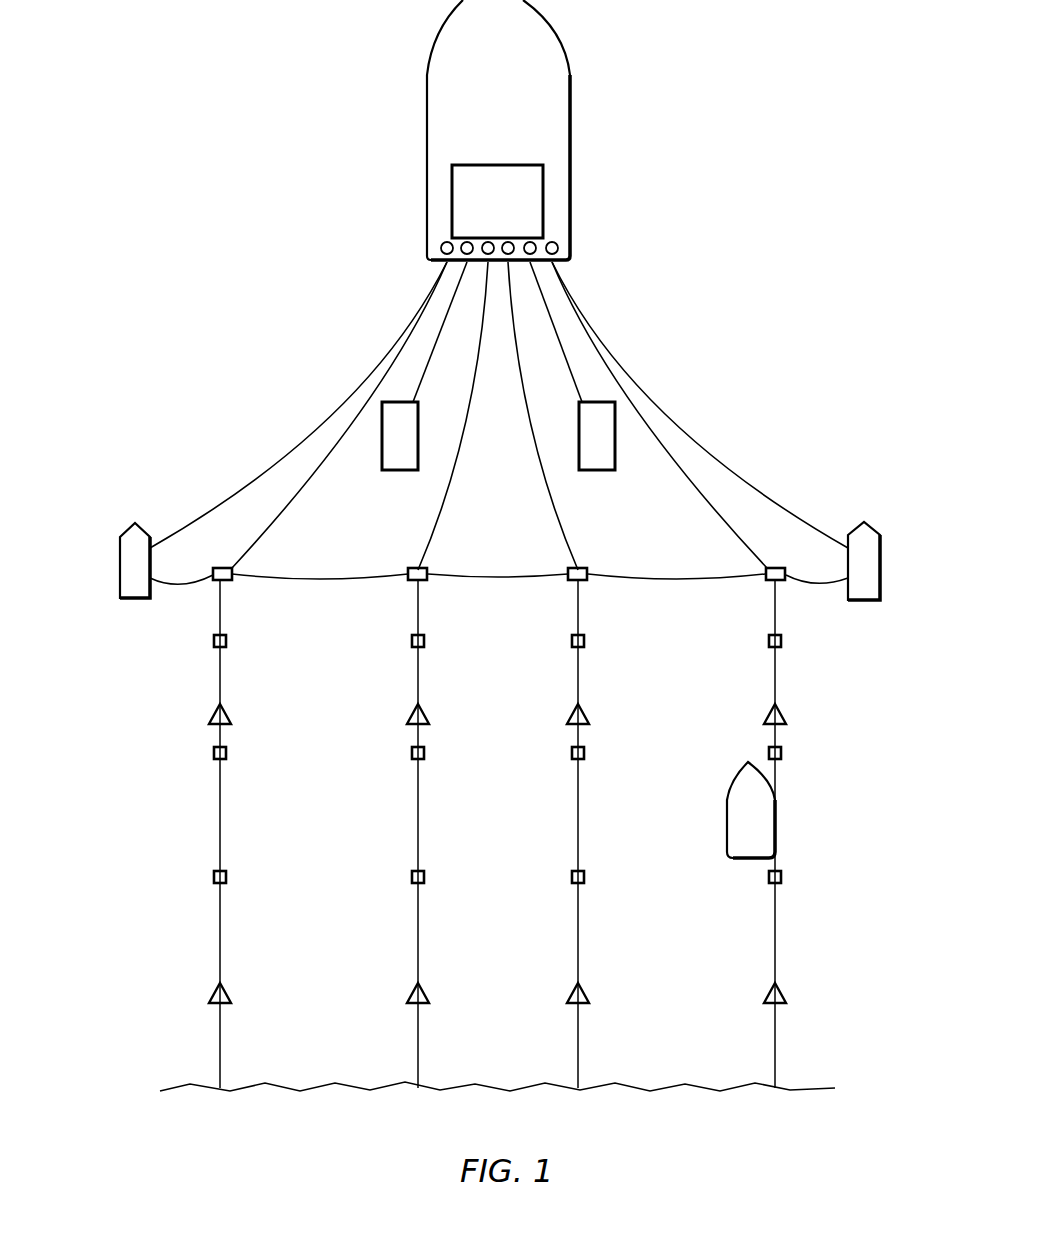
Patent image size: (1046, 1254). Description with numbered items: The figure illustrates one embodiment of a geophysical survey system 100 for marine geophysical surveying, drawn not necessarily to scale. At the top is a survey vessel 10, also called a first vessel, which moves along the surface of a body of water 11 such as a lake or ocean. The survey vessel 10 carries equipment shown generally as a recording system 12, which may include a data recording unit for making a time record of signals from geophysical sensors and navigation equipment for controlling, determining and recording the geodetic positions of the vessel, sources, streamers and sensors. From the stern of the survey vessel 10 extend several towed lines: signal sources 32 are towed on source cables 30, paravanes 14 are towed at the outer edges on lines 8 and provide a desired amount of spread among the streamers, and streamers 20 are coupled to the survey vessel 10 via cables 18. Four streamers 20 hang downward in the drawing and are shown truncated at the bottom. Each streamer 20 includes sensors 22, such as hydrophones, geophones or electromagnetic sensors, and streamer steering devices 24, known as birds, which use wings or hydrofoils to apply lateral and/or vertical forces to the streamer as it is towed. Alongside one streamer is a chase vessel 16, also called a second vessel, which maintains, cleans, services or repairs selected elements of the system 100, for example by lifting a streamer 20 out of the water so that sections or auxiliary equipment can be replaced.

The geophysical survey system 100 is at (280, 86).
The body of water 11 is at (680, 66).
The survey vessel 10 is at (510, 95).
The recording system 12 is at (496, 165).
The source cable 30 is at (455, 297).
The tow rope (lead line) 8 is at (378, 358).
The cable 18 is at (536, 443).
The signal source 32 is at (400, 472).
The paravane 14 is at (137, 601).
The streamer 20 is at (223, 613).
The sensor 22 is at (428, 644).
The streamer steering device 24 is at (431, 712).
The chase vessel 16 is at (762, 818).